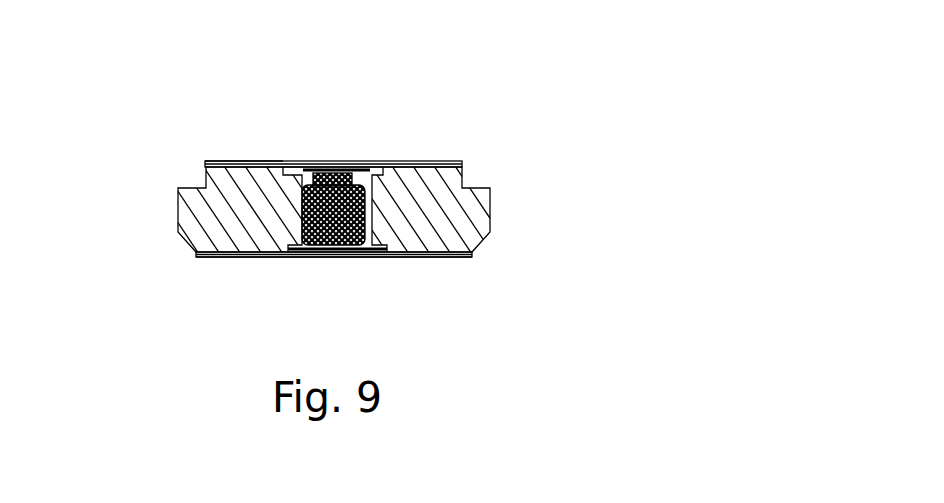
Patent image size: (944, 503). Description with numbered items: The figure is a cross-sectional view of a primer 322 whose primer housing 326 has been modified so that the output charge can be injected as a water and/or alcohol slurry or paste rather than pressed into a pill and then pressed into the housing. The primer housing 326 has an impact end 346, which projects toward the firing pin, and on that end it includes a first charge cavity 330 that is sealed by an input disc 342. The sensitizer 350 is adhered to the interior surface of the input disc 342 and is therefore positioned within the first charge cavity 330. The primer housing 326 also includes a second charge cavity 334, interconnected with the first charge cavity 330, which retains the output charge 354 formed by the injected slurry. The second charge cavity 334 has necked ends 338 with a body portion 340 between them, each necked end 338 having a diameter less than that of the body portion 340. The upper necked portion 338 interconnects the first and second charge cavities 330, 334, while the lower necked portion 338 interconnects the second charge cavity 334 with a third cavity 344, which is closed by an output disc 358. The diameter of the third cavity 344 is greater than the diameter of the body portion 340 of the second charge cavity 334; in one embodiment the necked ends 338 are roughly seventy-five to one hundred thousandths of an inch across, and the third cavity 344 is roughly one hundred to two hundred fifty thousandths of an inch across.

The primer 322 is at (490, 207).
The primer housing 326 is at (490, 232).
The first charge cavity 330 is at (423, 162).
The second charge cavity 334 is at (405, 255).
The necked ends 338 is at (305, 183).
The body portion 340 is at (302, 205).
The input disc 342 is at (210, 161).
The third cavity 344 is at (399, 258).
The impact end 346 is at (240, 161).
The sensitizer 350 is at (377, 170).
The output charge 354 is at (368, 203).
The output disc 358 is at (455, 255).